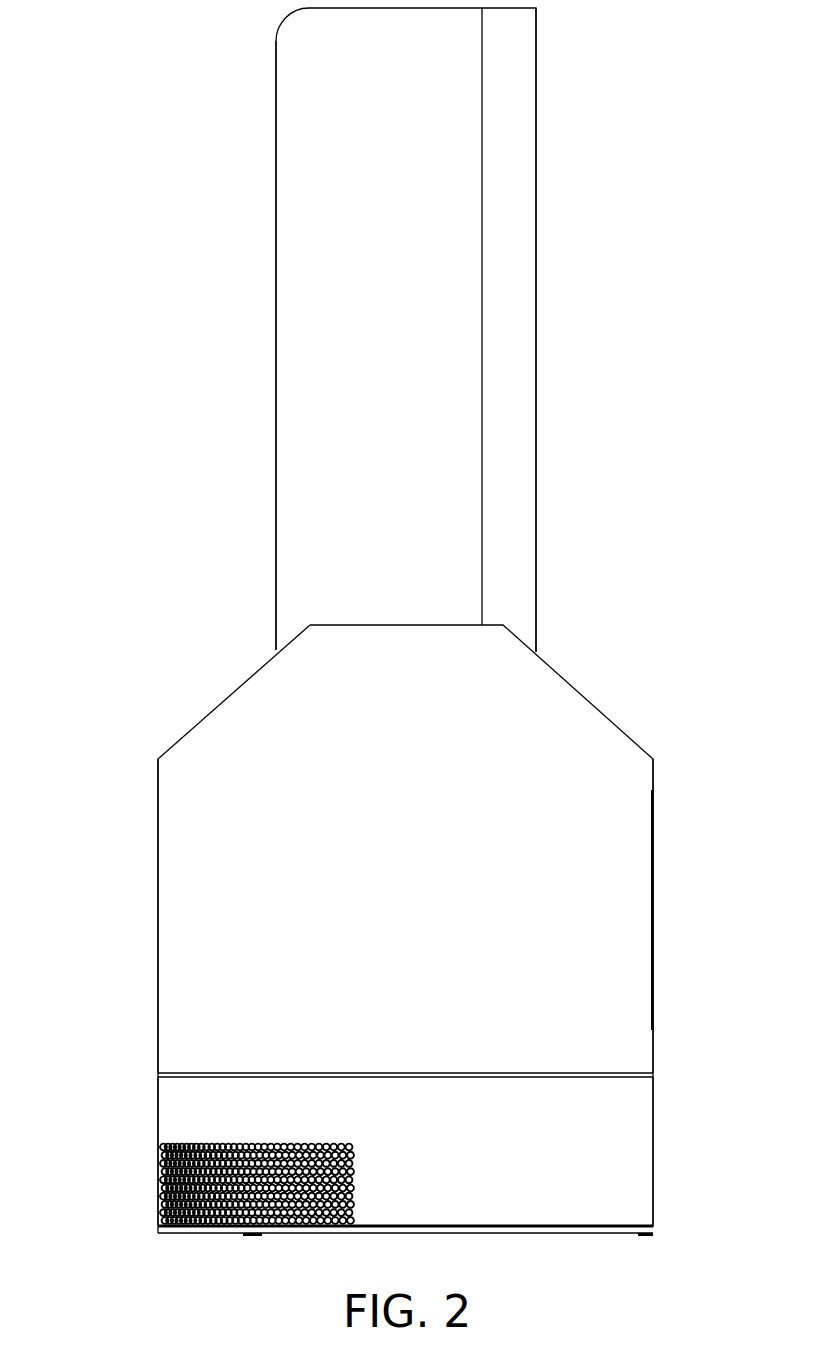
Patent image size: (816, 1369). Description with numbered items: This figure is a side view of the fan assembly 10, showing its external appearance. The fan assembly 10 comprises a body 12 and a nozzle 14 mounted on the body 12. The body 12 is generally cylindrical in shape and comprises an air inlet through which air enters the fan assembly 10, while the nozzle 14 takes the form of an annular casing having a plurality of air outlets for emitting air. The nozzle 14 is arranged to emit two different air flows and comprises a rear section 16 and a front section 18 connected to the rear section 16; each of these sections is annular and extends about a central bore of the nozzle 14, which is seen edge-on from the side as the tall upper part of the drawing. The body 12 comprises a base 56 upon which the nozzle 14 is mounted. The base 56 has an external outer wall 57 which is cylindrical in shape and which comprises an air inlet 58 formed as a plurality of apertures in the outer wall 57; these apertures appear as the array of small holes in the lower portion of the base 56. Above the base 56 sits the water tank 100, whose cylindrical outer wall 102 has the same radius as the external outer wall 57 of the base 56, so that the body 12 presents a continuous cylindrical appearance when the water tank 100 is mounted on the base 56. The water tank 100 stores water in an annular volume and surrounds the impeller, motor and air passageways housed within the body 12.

The fan assembly 10 is at (628, 213).
The body 12 is at (114, 822).
The nozzle 14 is at (234, 248).
The rear section 16 is at (290, 407).
The front section 18 is at (524, 409).
The water tank 100 is at (644, 778).
The cylindrical outer wall 102 is at (158, 960).
The external outer wall 57 is at (158, 1104).
The base 56 is at (643, 1147).
The air inlet 58 is at (352, 1205).